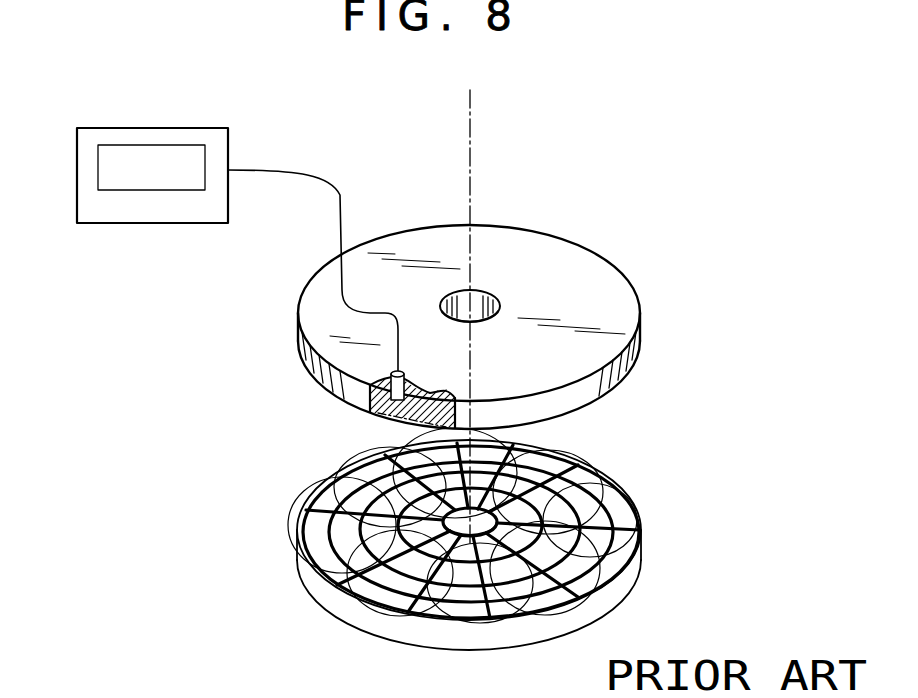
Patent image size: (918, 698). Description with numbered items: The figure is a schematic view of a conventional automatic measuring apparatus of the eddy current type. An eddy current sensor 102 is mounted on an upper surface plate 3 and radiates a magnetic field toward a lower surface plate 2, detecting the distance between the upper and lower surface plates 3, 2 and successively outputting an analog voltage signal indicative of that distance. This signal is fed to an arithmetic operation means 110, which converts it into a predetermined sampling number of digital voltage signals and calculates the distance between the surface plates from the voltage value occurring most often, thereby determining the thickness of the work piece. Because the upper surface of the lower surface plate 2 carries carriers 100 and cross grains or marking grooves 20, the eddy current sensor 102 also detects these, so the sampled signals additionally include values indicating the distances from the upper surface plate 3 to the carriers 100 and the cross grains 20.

The arithmetic operation means 110 is at (130, 128).
The upper surface plate 3 is at (640, 330).
The eddy current sensor 102 is at (397, 371).
The carriers 100 is at (602, 468).
The cross grains 20 is at (633, 513).
The lower surface plate 2 is at (640, 550).